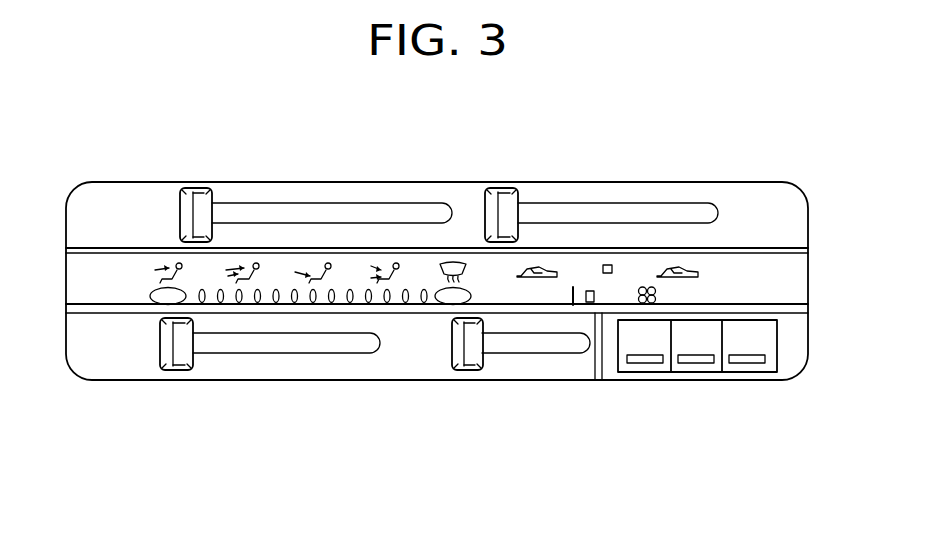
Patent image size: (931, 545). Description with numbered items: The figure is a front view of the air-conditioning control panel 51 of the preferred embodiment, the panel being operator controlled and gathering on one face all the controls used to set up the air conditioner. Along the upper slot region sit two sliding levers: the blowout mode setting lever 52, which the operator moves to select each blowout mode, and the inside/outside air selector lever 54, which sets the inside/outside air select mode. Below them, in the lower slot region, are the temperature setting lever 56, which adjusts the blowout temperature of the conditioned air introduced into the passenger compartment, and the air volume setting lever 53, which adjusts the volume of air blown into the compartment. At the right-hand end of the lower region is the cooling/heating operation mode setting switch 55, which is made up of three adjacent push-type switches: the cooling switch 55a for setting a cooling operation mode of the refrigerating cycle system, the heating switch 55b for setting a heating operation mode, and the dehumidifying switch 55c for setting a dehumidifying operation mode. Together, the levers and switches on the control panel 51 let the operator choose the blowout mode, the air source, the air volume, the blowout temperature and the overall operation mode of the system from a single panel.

The control panel 51 is at (393, 175).
The blowout mode setting lever 52 is at (200, 188).
The air volume setting lever 53 is at (470, 370).
The inside/outside air selector lever 54 is at (508, 188).
The cooling/heating operation mode setting switch 55 is at (756, 475).
The cooling switch 55a is at (647, 363).
The heating switch 55b is at (700, 363).
The dehumidifying switch 55c is at (752, 363).
The temperature setting lever 56 is at (178, 370).